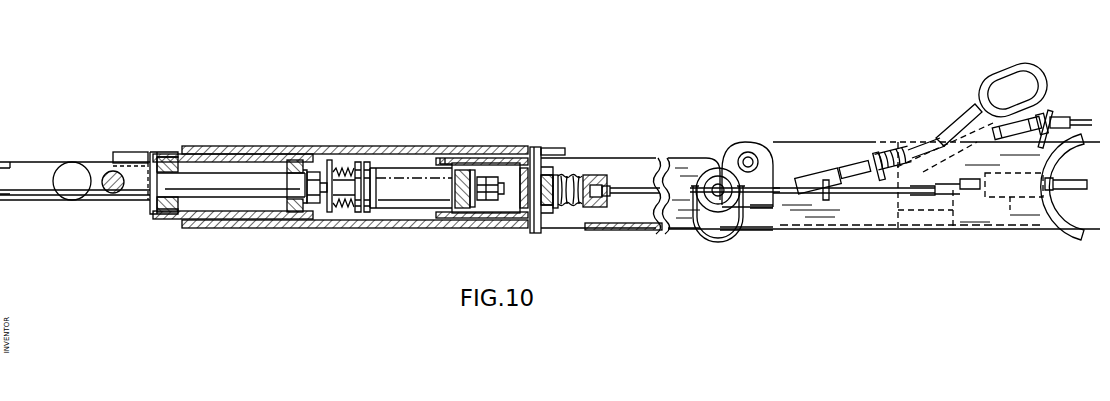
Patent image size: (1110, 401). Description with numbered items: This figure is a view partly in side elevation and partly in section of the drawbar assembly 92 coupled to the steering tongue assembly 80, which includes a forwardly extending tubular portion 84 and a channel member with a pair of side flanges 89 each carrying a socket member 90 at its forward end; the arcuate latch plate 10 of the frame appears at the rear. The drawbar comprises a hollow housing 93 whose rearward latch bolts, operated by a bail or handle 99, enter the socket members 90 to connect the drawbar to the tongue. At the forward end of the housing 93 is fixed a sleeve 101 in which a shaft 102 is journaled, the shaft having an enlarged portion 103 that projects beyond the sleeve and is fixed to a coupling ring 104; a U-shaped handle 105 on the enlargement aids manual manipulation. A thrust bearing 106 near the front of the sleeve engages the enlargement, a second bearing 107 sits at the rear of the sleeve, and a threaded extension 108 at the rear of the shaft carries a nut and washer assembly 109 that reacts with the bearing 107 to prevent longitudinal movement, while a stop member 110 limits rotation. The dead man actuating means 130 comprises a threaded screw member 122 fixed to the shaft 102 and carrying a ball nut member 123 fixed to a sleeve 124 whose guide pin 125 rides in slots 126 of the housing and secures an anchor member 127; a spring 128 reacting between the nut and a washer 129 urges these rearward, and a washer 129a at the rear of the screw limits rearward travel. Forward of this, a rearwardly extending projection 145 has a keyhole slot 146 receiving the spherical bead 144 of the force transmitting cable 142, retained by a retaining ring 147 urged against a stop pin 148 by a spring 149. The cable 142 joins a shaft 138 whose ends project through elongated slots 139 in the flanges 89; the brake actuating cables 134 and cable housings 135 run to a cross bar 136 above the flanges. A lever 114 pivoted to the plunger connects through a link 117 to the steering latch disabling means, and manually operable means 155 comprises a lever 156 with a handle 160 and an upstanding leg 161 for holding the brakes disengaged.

The latch plate 10 is at (1078, 178).
The tongue assembly 80 is at (965, 255).
The tubular portion 84 is at (1010, 200).
The side flanges 89 is at (846, 220).
The socket member 90 is at (718, 183).
The drawbar assembly 92 is at (280, 120).
The hollow housing 93 is at (278, 224).
The bail or handle 99 is at (735, 242).
The sleeve 101 is at (170, 158).
The shaft 102 is at (218, 190).
The enlarged portion 103 is at (95, 203).
The coupling ring 104 is at (38, 168).
The U-shaped handle 105 is at (116, 194).
The thrust bearing 106 is at (215, 146).
The second bearing 107 is at (298, 160).
The threaded extension 108 is at (346, 170).
The nut and washer assembly 109 is at (318, 206).
The stop member 110 is at (126, 152).
The lever 114 is at (960, 193).
The link 117 is at (860, 194).
The threaded screw member 122 is at (462, 172).
The ball nut member 123 is at (410, 166).
The sleeve 124 is at (484, 164).
The guide pin 125 is at (541, 150).
The slots 126 is at (556, 154).
The anchor member 127 is at (557, 176).
The spring 128 is at (349, 213).
The washer 129 is at (329, 162).
The washer 129a is at (476, 178).
The actuating means 130 is at (442, 238).
The actuating cable 134 is at (1020, 127).
The cable housing 135 is at (1062, 110).
The cross bar 136 is at (1040, 140).
The shaft 138 is at (900, 152).
The elongated slots 139 is at (878, 164).
The force transmitting cable 142 is at (654, 228).
The spherical bead 144 is at (612, 188).
The rearwardly extending projection 145 is at (562, 206).
The keyhole slot 146 is at (601, 184).
The retaining ring 147 is at (600, 208).
The stop pin 148 is at (612, 199).
The spring 149 is at (548, 214).
The manually operable means 155 is at (995, 55).
The lever 156 is at (972, 130).
The handle 160 is at (1030, 72).
The upstanding leg 161 is at (860, 160).